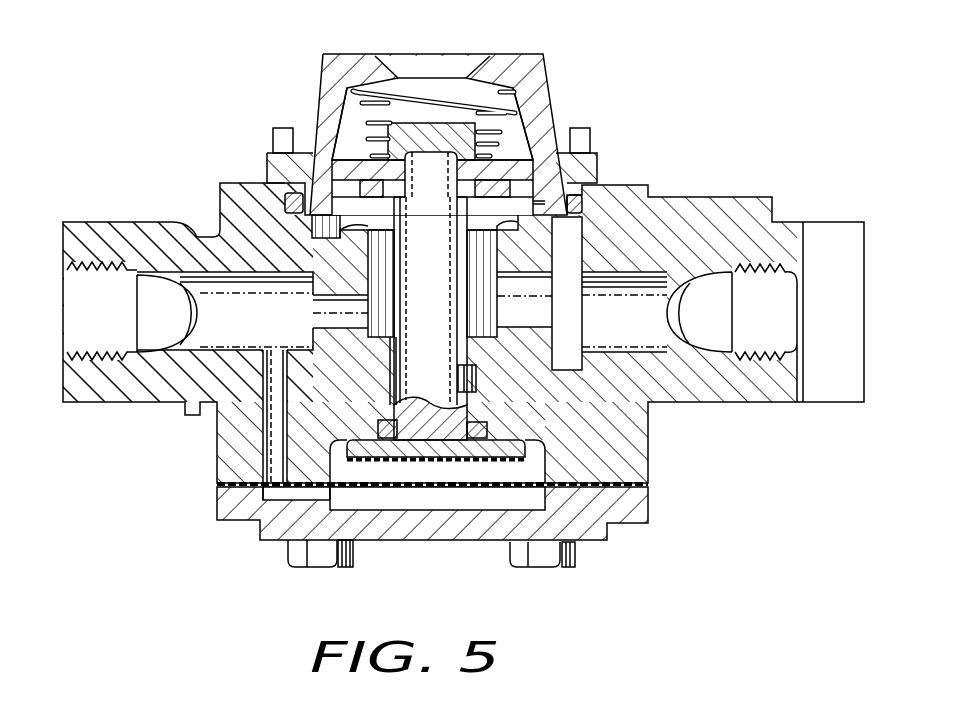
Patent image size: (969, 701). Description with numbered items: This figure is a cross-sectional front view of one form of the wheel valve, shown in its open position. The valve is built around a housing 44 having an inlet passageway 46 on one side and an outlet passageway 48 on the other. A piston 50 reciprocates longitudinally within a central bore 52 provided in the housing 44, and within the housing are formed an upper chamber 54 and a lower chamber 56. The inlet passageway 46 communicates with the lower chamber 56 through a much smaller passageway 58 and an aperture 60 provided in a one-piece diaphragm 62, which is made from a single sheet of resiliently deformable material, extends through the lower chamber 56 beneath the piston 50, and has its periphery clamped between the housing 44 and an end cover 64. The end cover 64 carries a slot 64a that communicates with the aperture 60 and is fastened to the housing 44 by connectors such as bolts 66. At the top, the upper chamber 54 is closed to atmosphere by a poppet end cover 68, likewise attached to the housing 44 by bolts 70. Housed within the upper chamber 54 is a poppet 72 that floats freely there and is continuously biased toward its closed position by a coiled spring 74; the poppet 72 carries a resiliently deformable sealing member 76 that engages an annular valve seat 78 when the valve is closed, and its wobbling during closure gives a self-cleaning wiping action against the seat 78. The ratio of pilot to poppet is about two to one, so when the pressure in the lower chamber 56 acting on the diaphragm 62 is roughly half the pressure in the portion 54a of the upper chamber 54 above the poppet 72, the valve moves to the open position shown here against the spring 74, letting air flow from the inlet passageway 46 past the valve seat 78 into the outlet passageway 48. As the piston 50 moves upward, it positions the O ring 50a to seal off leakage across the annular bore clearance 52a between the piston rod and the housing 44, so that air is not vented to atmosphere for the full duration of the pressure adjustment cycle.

The housing 44 is at (752, 197).
The inlet passageway 46 is at (100, 265).
The outlet passageway 48 is at (800, 283).
The piston 50 is at (434, 321).
The O ring 50a is at (473, 430).
The central bore 52 is at (460, 385).
The annular bore clearance 52a is at (392, 378).
The upper chamber 54 is at (557, 214).
The portion of upper chamber 54a is at (350, 118).
The lower chamber 56 is at (413, 497).
The passageway 58 is at (275, 440).
The aperture 60 is at (265, 488).
The diaphragm 62 is at (240, 475).
The end cover 64 is at (642, 507).
The slot 64a is at (300, 493).
The bolts 66 is at (542, 567).
The poppet end cover 68 is at (545, 80).
The bolts 70 is at (590, 137).
The poppet 72 is at (432, 135).
The coiled spring 74 is at (520, 118).
The sealing member 76 is at (333, 177).
The annular valve seat 78 is at (373, 226).